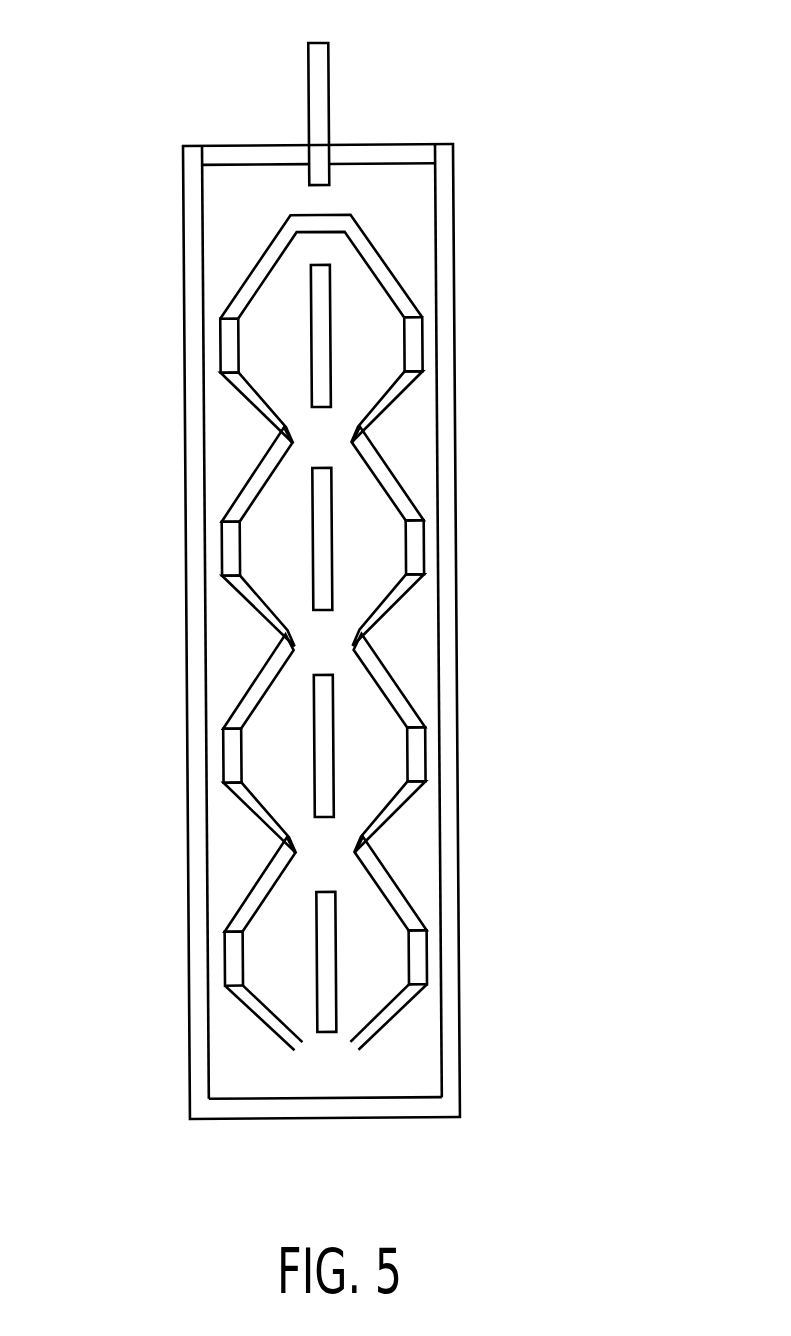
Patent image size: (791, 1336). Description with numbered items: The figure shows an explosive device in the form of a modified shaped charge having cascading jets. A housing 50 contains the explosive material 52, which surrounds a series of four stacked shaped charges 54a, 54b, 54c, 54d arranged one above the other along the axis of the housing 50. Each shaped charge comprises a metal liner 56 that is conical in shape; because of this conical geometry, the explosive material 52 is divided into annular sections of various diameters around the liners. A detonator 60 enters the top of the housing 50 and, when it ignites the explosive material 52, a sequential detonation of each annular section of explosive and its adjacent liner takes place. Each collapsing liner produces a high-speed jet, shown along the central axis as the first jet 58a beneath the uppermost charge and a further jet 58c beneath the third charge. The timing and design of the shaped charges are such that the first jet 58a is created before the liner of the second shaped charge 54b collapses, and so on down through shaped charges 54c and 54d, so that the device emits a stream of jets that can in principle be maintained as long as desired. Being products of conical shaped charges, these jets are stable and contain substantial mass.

The housing 50 is at (252, 631).
The explosive material 52 is at (317, 616).
The shaped charge 54a is at (313, 312).
The shaped charge 54b is at (314, 518).
The shaped charge 54c is at (315, 722).
The shaped charge 54d is at (413, 922).
The metal liner 56 is at (163, 611).
The first jet 58a is at (181, 311).
The jet 58c is at (183, 743).
The detonator 60 is at (260, 92).